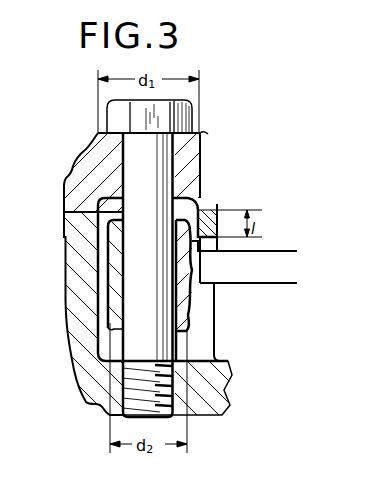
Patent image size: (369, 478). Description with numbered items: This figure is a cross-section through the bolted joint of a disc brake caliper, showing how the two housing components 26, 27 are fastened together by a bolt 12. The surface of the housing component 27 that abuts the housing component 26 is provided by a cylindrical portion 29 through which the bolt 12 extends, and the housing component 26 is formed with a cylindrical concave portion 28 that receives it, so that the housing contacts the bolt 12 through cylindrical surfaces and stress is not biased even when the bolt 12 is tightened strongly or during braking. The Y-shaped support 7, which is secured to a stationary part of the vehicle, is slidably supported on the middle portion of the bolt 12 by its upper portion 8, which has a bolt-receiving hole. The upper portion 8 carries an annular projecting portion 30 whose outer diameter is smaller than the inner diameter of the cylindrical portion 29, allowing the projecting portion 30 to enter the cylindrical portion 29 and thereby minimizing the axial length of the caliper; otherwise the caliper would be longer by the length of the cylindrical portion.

The support 7 is at (263, 278).
The upper portion 8 is at (113, 292).
The bolt 12 is at (140, 285).
The housing component 26 is at (80, 180).
The housing component 27 is at (78, 332).
The cylindrical concave portion 28 is at (199, 197).
The cylindrical portion 29 is at (219, 201).
The annular projecting portion 30 is at (113, 233).